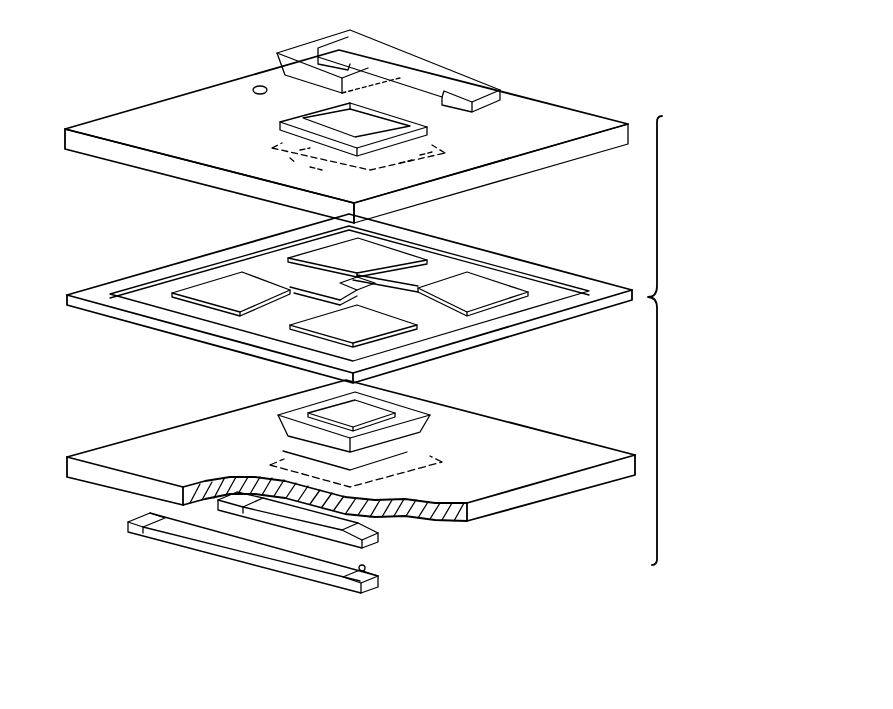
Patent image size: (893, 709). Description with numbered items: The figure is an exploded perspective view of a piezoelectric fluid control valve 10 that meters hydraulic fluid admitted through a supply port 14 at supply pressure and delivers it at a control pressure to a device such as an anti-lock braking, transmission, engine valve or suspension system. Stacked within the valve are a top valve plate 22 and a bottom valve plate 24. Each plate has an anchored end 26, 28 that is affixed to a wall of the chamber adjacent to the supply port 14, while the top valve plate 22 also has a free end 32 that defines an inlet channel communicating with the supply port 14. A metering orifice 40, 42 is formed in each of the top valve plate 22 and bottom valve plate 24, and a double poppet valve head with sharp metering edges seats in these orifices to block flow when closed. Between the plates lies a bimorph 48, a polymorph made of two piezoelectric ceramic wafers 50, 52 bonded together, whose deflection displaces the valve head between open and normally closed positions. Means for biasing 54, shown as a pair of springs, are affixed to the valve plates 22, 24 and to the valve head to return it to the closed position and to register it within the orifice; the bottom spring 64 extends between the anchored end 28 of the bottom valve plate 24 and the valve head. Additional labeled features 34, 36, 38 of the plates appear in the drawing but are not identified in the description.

The piezoelectric fluid control valve 10 is at (115, 48).
The supply port 14 is at (263, 85).
The top valve plate 22 is at (137, 140).
The bottom valve plate 24 is at (185, 427).
The anchored end 26 is at (167, 97).
The anchored end 28 is at (97, 451).
The free end 32 is at (533, 168).
The edge of lower plate 34 is at (562, 487).
The side surface of upper plate 36 is at (180, 170).
The surface of lower plate 38 is at (533, 430).
The metering orifice 40 is at (355, 128).
The metering orifice 42 is at (373, 458).
The bimorph 48 is at (267, 563).
The piezoelectric ceramic wafer 50 is at (372, 571).
The piezoelectric ceramic wafer 52 is at (385, 580).
The means for biasing 54 is at (465, 85).
The bottom spring 64 is at (233, 508).